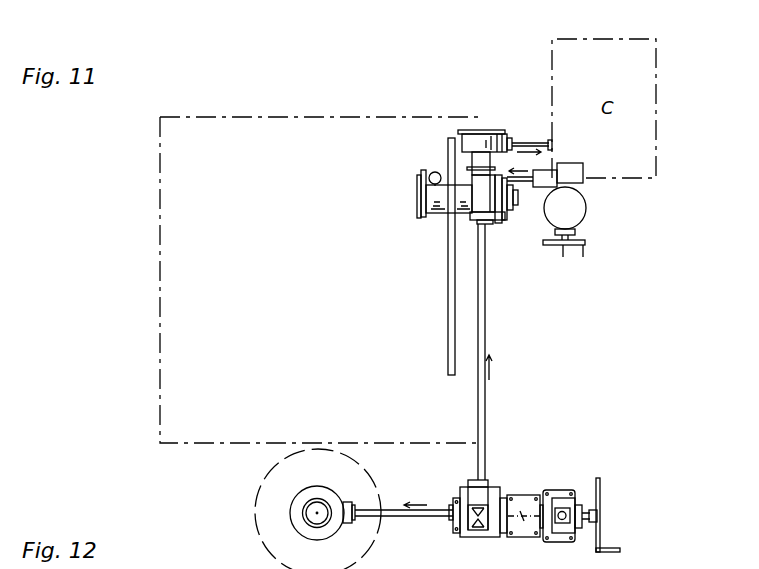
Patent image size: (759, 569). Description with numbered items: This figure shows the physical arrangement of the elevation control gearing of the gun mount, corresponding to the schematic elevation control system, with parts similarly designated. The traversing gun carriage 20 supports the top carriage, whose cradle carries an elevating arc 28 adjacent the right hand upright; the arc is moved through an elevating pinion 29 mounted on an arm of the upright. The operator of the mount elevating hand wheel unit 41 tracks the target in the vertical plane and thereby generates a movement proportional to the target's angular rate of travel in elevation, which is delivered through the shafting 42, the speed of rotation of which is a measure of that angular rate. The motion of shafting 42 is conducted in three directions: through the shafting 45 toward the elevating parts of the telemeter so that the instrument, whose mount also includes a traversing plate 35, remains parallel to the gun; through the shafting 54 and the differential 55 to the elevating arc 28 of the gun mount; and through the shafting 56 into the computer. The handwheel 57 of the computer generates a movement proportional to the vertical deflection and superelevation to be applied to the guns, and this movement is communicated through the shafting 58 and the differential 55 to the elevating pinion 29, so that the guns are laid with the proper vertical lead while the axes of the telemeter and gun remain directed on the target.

The carriage 20 is at (321, 280).
The elevating arc 28 is at (451, 283).
The pinion 29 is at (438, 215).
The traversing plate 35 is at (260, 522).
The mount elevating hand wheel unit 41 is at (601, 536).
The shafting 42 is at (527, 497).
The shafting 45 is at (425, 519).
The shafting 54 is at (486, 405).
The differential 55 is at (492, 227).
The shafting 56 is at (532, 139).
The handwheel 57 is at (564, 222).
The shafting 58 is at (525, 186).